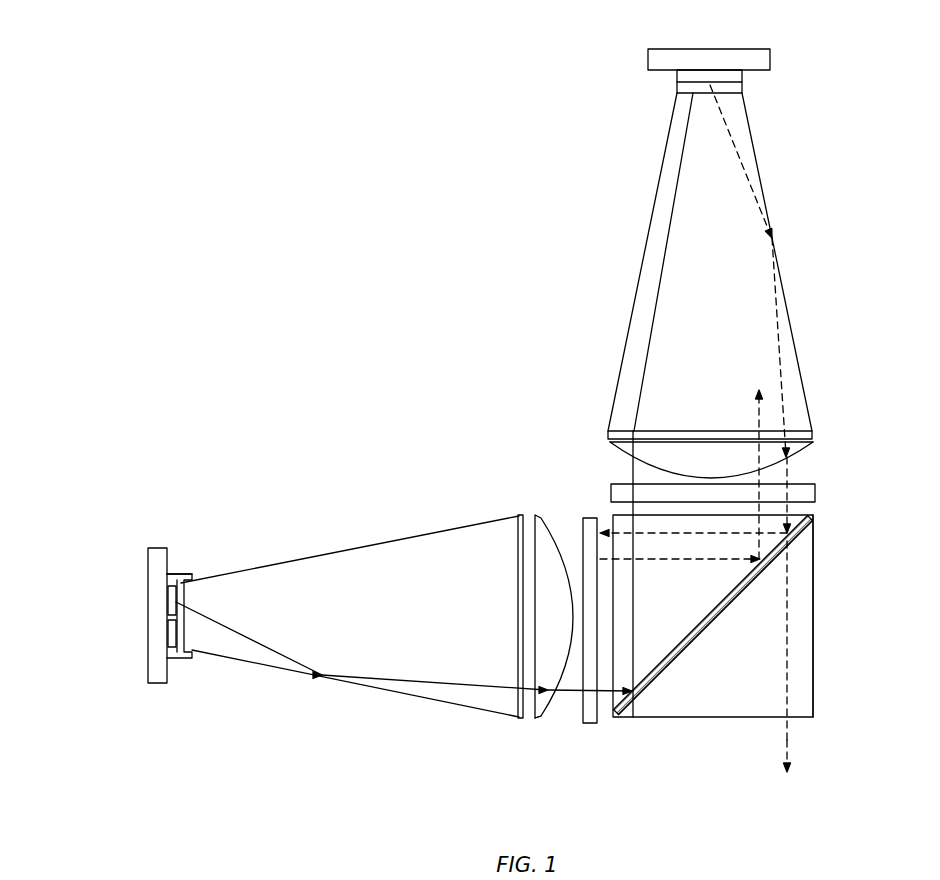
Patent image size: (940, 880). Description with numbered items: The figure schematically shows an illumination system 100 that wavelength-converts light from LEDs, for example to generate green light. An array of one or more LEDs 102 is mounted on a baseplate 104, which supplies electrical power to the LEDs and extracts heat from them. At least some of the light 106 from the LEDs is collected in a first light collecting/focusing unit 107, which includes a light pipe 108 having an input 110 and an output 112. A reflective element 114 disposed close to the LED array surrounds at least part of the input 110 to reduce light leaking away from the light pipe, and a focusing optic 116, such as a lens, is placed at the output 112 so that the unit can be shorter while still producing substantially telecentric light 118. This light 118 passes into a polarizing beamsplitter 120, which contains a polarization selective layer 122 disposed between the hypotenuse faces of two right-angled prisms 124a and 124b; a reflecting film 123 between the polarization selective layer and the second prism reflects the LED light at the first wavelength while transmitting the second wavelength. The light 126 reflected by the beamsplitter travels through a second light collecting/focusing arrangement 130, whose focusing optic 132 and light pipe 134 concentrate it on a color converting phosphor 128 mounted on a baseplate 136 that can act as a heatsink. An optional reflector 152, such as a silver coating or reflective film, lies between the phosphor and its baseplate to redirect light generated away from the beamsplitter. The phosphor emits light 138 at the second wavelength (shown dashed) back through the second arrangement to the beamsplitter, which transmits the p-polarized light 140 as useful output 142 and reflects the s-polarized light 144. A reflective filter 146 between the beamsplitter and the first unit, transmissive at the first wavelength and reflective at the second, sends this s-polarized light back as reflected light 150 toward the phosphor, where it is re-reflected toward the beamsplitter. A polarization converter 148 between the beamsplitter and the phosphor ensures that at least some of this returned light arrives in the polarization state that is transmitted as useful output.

The illumination system 100 is at (141, 416).
The LEDs 102 is at (170, 598).
The baseplate 104 is at (148, 641).
The light 106 is at (263, 648).
The light collecting/focusing unit 107 is at (368, 707).
The light pipe 108 is at (338, 548).
The input 110 is at (176, 573).
The output 112 is at (522, 535).
The reflective element 114 is at (174, 572).
The focusing optic 116 is at (548, 517).
The light 118 is at (541, 717).
The polarizing beamsplitter 120 is at (742, 718).
The polarization selective layer 122 is at (811, 516).
The reflecting film 123 is at (815, 521).
The first right-angled prism 124a is at (613, 703).
The second right-angled prism 124b is at (815, 656).
The light 126 is at (657, 318).
The color converting phosphor 128 is at (677, 88).
The second light collecting/focusing arrangement 130 is at (836, 221).
The focusing optic 132 is at (805, 445).
The light pipe 134 is at (648, 225).
The baseplate 136 is at (770, 60).
The light 138 is at (778, 335).
The p-polarized light 140 is at (787, 583).
The useful output 142 is at (792, 768).
The s-polarized light 144 is at (608, 532).
The reflective filter 146 is at (586, 724).
The polarization converter 148 is at (818, 487).
The reflected light 150 is at (760, 427).
The reflector 152 is at (745, 82).